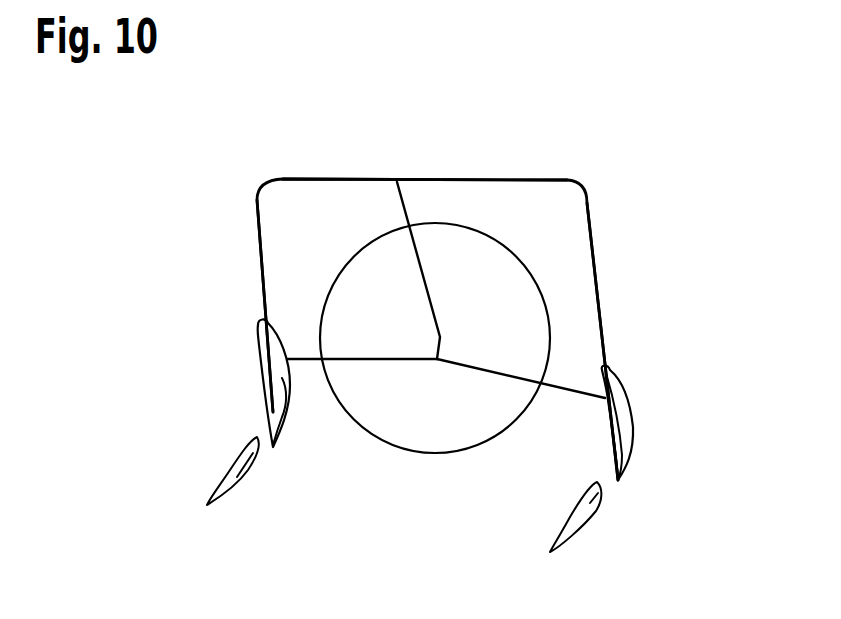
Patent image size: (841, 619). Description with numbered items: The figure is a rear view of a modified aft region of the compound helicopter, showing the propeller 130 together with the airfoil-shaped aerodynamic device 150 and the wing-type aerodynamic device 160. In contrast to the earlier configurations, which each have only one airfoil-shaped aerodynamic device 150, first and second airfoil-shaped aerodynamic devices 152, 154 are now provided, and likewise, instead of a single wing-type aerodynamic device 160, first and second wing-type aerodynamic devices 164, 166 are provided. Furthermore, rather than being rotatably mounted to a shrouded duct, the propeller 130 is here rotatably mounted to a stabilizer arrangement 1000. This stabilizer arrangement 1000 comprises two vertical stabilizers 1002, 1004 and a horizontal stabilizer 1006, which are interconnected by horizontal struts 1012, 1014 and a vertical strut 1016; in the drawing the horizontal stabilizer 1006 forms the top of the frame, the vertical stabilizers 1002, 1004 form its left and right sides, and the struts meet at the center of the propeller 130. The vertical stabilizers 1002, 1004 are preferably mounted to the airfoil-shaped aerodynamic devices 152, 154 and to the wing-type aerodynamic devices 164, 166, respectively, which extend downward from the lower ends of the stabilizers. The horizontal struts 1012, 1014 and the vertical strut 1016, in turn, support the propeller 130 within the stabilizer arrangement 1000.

The stabilizer arrangement 1000 is at (580, 165).
The vertical stabilizer 1002 is at (260, 270).
The vertical stabilizer 1004 is at (603, 312).
The horizontal stabilizer 1006 is at (313, 179).
The propeller 130 is at (527, 265).
The vertical strut 1016 is at (407, 215).
The horizontal strut 1012 is at (307, 360).
The horizontal strut 1014 is at (558, 388).
The airfoil-shaped aerodynamic device 150 is at (633, 400).
The first airfoil-shaped aerodynamic device 152 is at (627, 420).
The second airfoil-shaped aerodynamic device 154 is at (590, 513).
The wing-type aerodynamic device 160 is at (257, 350).
The first wing-type aerodynamic device 164 is at (284, 383).
The second wing-type aerodynamic device 166 is at (232, 480).